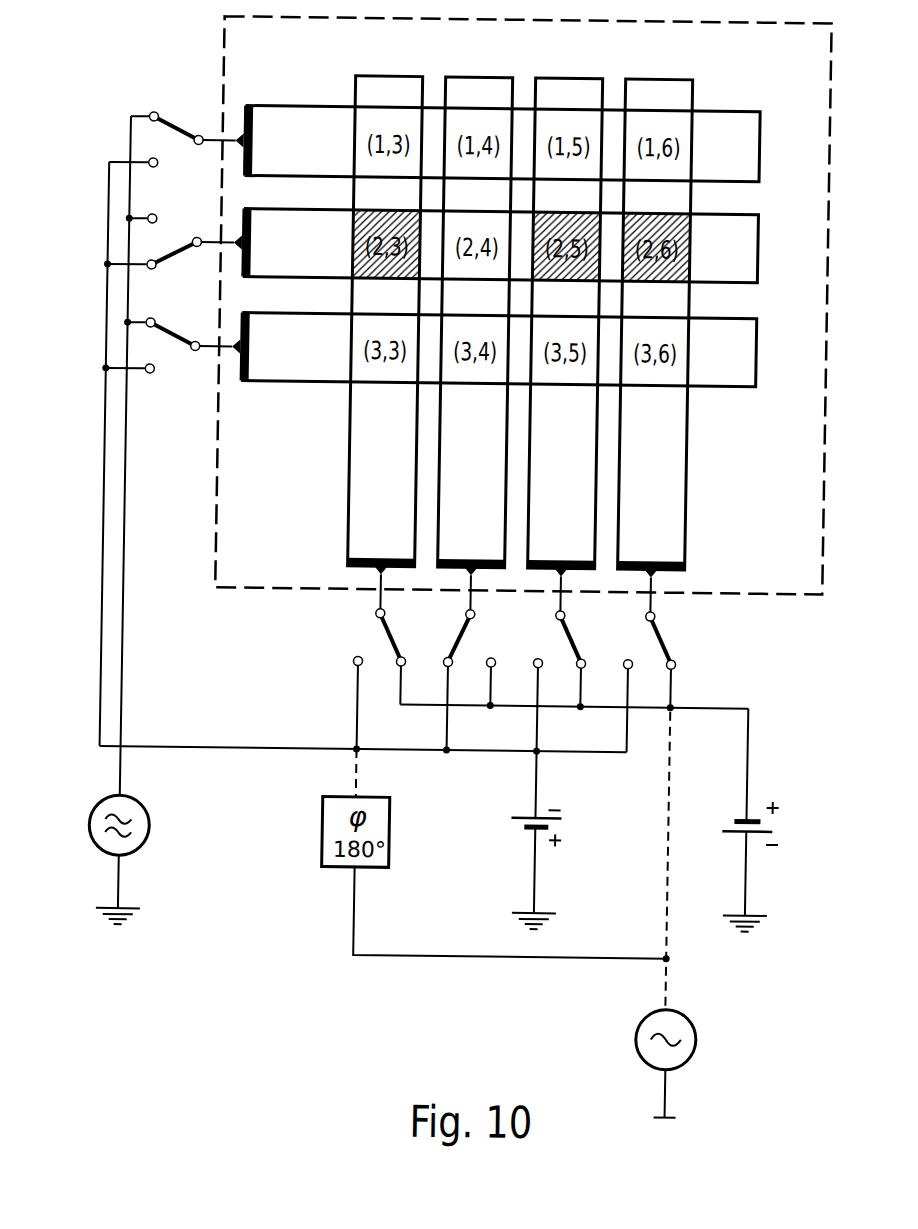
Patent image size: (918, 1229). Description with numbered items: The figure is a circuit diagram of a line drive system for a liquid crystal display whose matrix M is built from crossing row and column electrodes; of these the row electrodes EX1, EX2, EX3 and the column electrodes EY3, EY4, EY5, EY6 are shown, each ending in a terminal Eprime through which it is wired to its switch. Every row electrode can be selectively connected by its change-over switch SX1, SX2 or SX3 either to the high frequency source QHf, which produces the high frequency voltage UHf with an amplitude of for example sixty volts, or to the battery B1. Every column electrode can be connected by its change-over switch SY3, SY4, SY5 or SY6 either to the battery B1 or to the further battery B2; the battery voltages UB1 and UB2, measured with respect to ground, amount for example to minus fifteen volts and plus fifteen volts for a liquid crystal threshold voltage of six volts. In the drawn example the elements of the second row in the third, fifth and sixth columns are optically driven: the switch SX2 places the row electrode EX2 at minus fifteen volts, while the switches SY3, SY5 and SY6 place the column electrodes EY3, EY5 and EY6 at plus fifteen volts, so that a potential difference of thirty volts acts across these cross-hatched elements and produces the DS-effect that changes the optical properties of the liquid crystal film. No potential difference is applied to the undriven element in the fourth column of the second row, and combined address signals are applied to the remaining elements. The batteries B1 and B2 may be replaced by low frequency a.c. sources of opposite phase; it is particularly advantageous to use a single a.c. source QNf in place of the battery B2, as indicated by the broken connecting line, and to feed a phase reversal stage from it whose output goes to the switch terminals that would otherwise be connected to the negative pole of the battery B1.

The matrix M is at (826, 488).
The column electrode EY3 is at (379, 87).
The column electrode EY4 is at (469, 87).
The column electrode EY5 is at (559, 87).
The column electrode EY6 is at (649, 87).
The row electrode EX1 is at (752, 138).
The row electrode EX2 is at (752, 240).
The row electrode EX3 is at (752, 344).
The electrode contact terminal E' Eprime is at (251, 126).
The change-over switch SX1 is at (172, 125).
The change-over switch SX2 is at (169, 234).
The change-over switch SX3 is at (167, 331).
The change-over switch SY3 is at (379, 662).
The change-over switch SY4 is at (454, 663).
The change-over switch SY5 is at (556, 697).
The change-over switch SY6 is at (647, 665).
The high frequency voltage UHf is at (155, 637).
The battery voltage UB1 is at (364, 727).
The battery voltage UB2 is at (593, 688).
The high frequency source QHf is at (150, 860).
The a.c. voltage source QNf is at (697, 914).
The battery B1 is at (518, 866).
The battery B2 is at (772, 820).